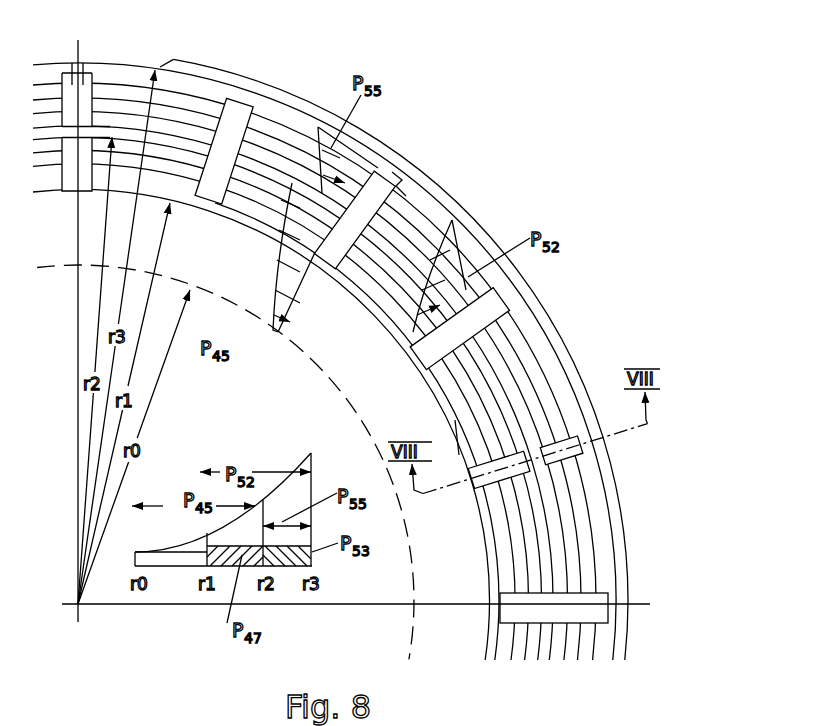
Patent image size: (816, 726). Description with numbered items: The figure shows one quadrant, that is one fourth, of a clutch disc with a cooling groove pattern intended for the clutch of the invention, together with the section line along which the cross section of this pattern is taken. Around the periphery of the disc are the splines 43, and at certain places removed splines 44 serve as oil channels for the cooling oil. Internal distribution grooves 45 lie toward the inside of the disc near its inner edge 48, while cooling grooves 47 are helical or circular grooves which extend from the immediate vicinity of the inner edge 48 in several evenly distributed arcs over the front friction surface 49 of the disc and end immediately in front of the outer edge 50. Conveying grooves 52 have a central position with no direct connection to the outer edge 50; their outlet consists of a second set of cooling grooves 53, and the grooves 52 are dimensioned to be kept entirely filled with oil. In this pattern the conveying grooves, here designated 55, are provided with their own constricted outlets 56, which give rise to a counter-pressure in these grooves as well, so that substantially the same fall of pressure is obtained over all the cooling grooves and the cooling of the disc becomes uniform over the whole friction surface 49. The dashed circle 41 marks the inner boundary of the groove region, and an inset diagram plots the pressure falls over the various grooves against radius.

The inner boundary circle 41 is at (318, 378).
The splines 43 is at (375, 145).
The removed splines 44 is at (562, 370).
The internal distribution grooves 45 is at (330, 270).
The cooling grooves 47 is at (537, 553).
The inner edges 48 is at (443, 383).
The front friction surface 49 is at (528, 420).
The outer edge 50 is at (537, 331).
The conveying grooves 52 is at (233, 115).
The second set of cooling grooves 53 is at (552, 580).
The conveying grooves 55 is at (397, 195).
The constricted outlets 56 is at (390, 188).